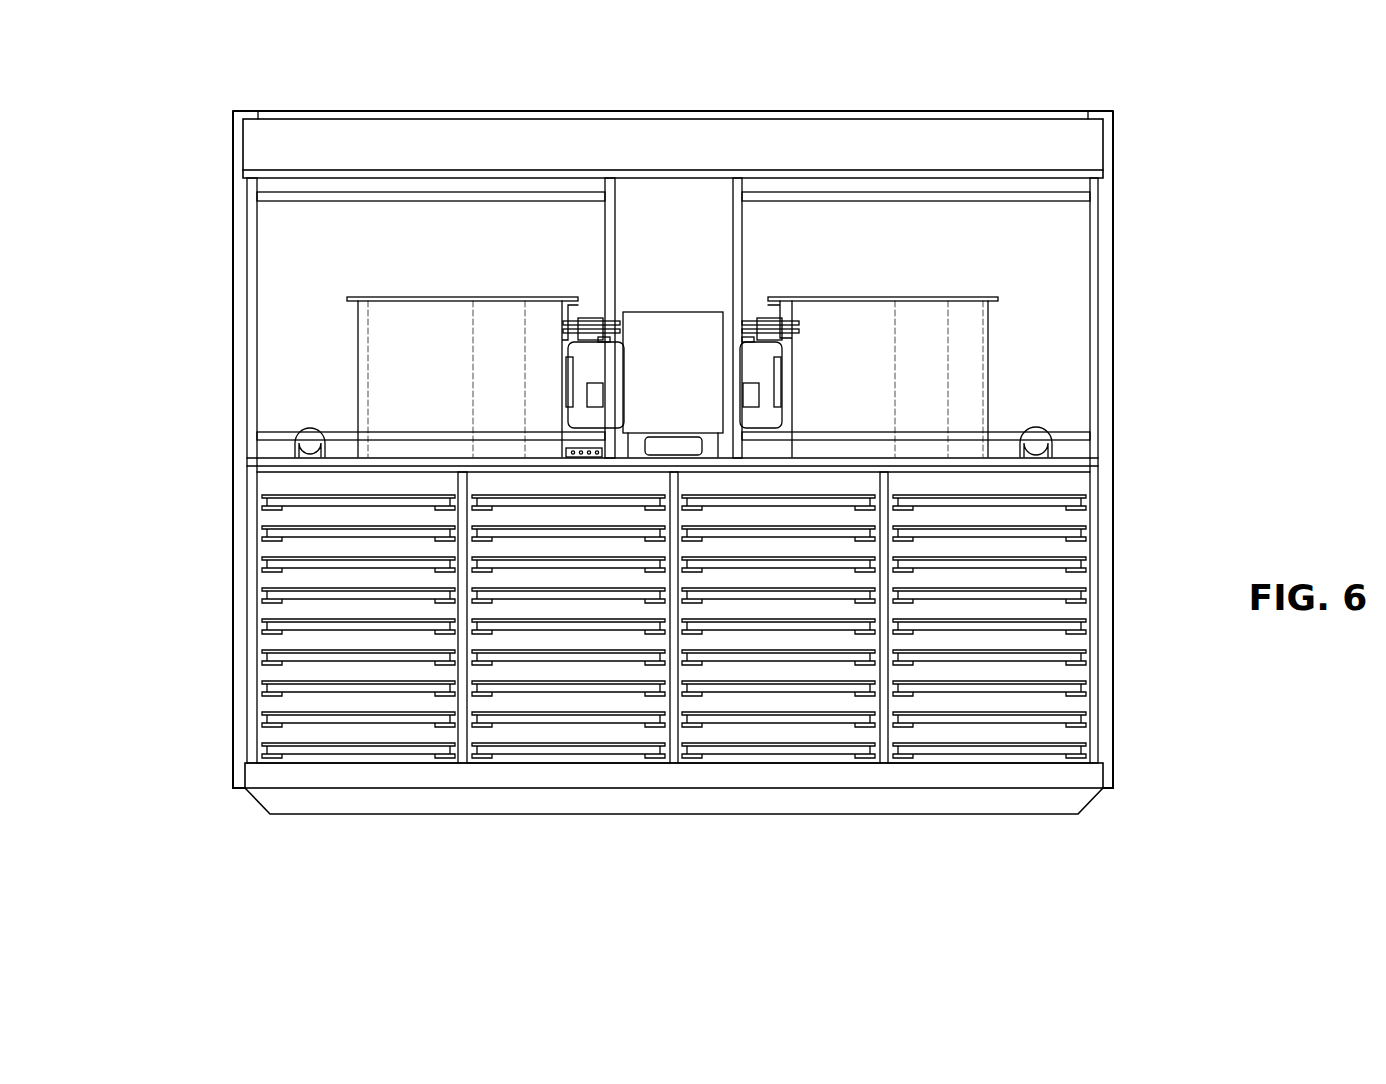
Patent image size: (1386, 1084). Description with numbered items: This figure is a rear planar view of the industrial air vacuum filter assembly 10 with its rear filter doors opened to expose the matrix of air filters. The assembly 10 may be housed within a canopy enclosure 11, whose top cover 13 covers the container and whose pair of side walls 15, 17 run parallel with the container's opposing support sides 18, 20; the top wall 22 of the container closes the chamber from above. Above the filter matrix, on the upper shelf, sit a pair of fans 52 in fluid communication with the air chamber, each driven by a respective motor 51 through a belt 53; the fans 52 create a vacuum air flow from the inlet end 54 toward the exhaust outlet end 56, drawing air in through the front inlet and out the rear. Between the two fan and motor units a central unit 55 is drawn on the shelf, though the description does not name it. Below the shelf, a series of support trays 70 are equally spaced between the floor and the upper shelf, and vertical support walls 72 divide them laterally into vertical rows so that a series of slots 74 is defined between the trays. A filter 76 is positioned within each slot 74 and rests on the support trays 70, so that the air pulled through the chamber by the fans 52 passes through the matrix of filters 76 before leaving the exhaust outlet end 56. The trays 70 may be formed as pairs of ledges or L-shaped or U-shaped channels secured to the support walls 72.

The air vacuum filter assembly 10 is at (1112, 86).
The canopy enclosure 11 is at (1113, 145).
The top cover 13 is at (955, 110).
The side wall 15 is at (1113, 290).
The side wall 17 is at (233, 224).
The support side 18 is at (1098, 411).
The support side 20 is at (258, 433).
The top wall 22 is at (735, 172).
The motor 51 is at (581, 350).
The fan 52 is at (420, 297).
The belt 53 is at (750, 321).
The inlet end 54 is at (950, 468).
The control unit 55 is at (661, 382).
The exhaust outlet end 56 is at (472, 297).
The support tray 70 is at (265, 760).
The vertical support wall 72 is at (463, 760).
The slot 74 is at (285, 548).
The filter 76 is at (262, 686).